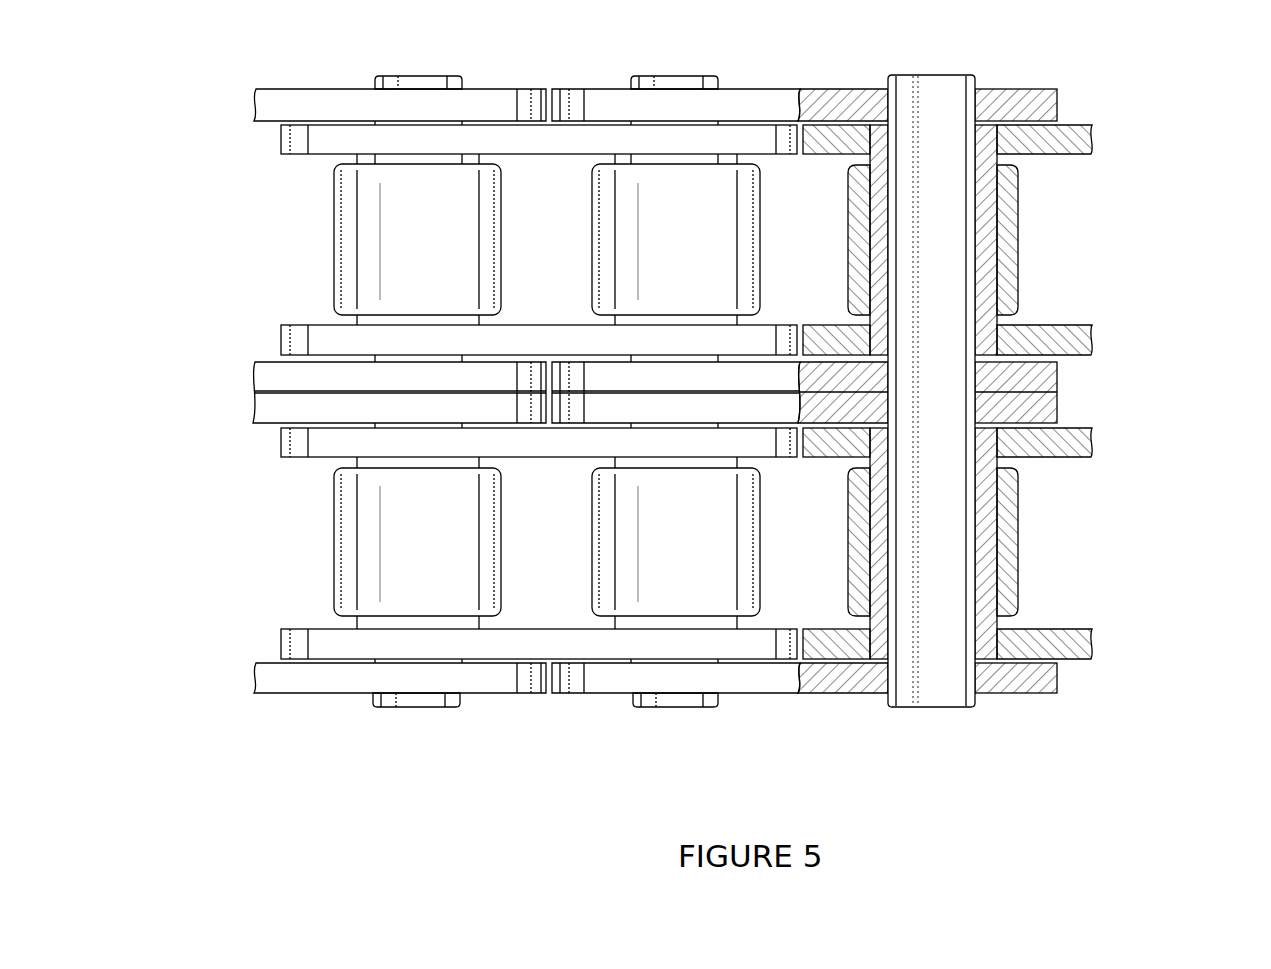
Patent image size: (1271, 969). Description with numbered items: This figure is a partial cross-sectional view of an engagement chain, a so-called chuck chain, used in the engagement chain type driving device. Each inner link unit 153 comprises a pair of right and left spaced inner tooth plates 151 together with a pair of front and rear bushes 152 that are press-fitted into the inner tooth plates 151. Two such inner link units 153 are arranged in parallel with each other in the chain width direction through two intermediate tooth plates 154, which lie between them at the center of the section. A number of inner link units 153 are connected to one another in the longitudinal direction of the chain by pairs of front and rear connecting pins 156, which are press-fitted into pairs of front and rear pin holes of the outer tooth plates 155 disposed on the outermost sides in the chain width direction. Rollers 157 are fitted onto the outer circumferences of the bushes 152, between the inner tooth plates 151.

The inner tooth plate 151 is at (296, 140).
The bush 152 is at (990, 232).
The inner link unit 153 is at (1172, 343).
The intermediate tooth plate 154 is at (272, 378).
The outer tooth plate 155 is at (272, 105).
The connecting pin 156 is at (932, 102).
The roller 157 is at (362, 242).